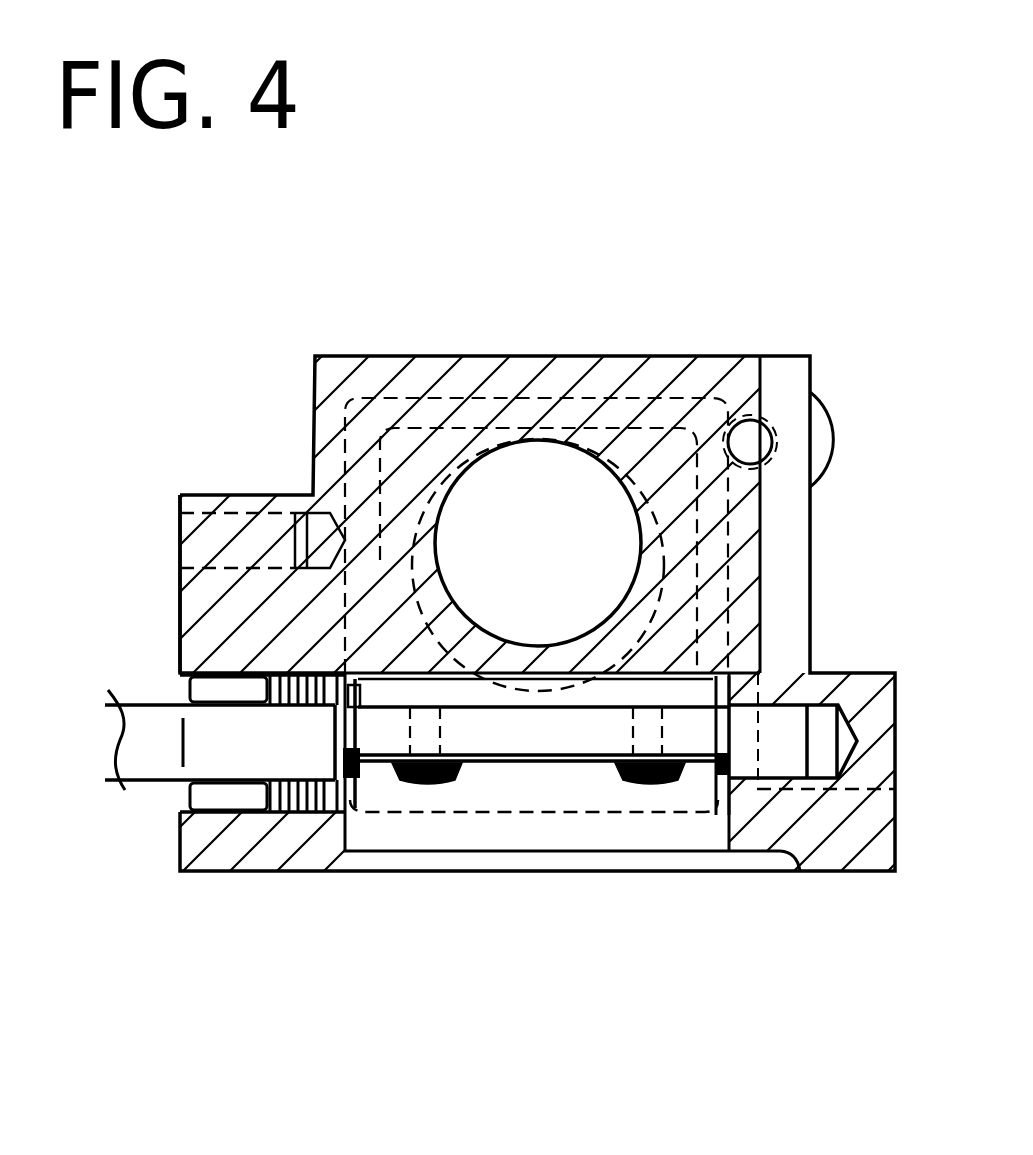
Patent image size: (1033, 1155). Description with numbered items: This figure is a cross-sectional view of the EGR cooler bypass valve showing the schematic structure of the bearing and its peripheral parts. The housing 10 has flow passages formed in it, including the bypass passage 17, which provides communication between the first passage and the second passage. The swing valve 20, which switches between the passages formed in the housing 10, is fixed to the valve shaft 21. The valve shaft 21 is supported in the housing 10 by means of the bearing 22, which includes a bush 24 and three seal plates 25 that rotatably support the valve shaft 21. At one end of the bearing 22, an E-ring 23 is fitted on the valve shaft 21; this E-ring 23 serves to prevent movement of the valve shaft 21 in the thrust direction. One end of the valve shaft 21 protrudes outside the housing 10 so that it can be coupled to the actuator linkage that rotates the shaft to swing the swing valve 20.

The housing 10 is at (568, 378).
The bypass passage 17 is at (565, 566).
The swing valve 20 is at (675, 800).
The valve shaft 21 is at (553, 735).
The bearing 22 is at (223, 671).
The E-ring 23 is at (177, 803).
The bush 24 is at (240, 800).
The seal plates 25 is at (307, 815).